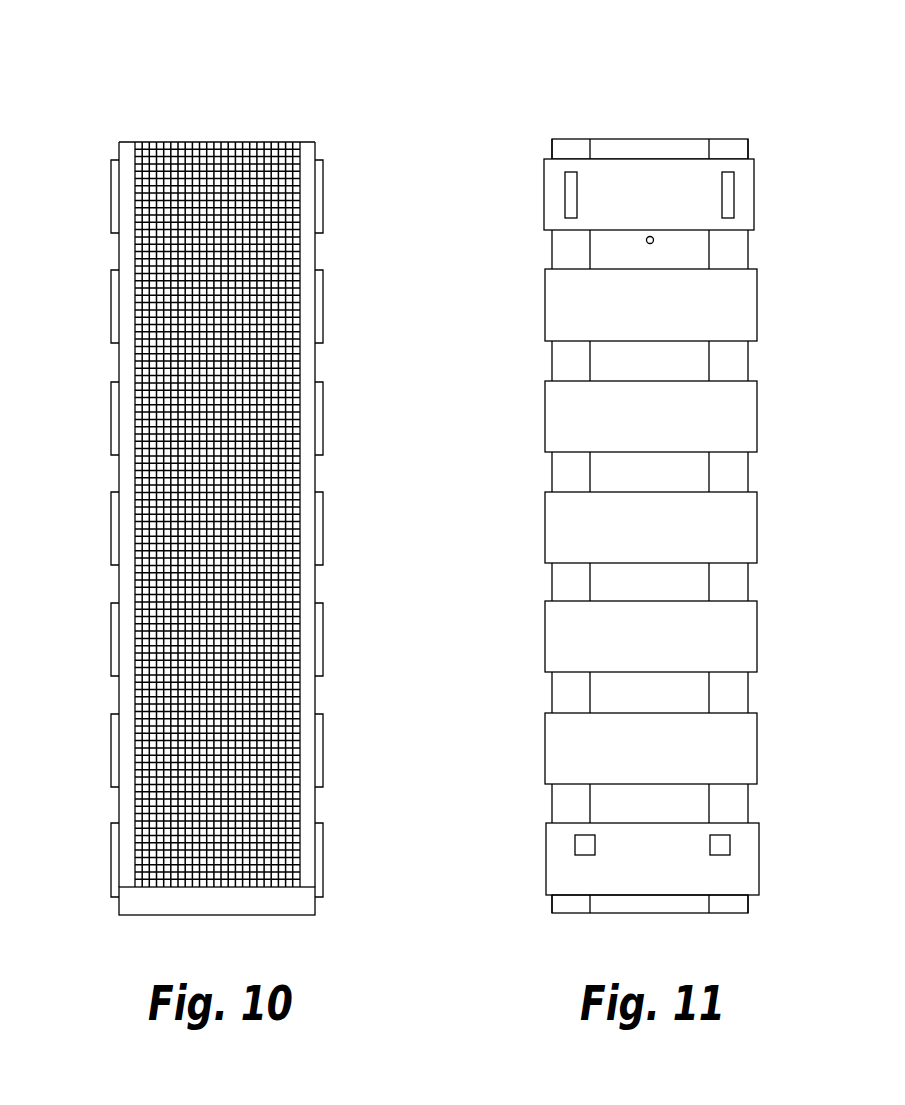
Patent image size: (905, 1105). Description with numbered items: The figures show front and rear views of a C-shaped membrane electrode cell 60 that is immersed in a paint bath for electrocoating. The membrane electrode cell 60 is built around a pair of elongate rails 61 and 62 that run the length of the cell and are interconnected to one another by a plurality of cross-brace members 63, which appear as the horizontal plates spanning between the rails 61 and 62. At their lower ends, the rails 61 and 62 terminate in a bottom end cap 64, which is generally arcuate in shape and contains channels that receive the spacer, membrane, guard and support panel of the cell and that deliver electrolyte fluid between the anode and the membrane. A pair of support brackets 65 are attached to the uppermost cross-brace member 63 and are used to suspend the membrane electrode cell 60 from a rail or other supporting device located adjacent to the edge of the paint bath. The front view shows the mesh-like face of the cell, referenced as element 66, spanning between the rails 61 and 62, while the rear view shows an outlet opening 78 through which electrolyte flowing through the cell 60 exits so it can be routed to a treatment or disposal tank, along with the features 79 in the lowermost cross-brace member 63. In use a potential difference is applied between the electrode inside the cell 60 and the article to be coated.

In FIG. 10, the membrane electrode cell 60 is at (362, 116).
In FIG. 11, the membrane electrode cell 60 is at (543, 96).
In FIG. 10, the elongate rail 61 is at (315, 362).
In FIG. 11, the elongate rail 61 is at (552, 248).
In FIG. 10, the elongate rail 62 is at (119, 252).
In FIG. 11, the elongate rail 62 is at (748, 246).
In FIG. 10, the cross-brace member 63 is at (321, 518).
In FIG. 11, the cross-brace member 63 is at (740, 408).
In FIG. 10, the bottom end cap 64 is at (132, 911).
In FIG. 11, the bottom end cap 64 is at (748, 903).
In FIG. 11, the support bracket 65 is at (565, 186).
In FIG. 10, the mesh screen 66 is at (313, 128).
In FIG. 11, the outlet opening 78 is at (647, 242).
In FIG. 11, the apertures 79 is at (575, 845).